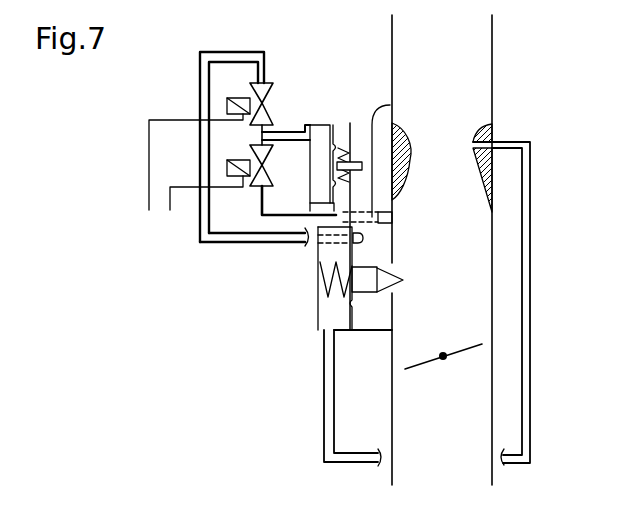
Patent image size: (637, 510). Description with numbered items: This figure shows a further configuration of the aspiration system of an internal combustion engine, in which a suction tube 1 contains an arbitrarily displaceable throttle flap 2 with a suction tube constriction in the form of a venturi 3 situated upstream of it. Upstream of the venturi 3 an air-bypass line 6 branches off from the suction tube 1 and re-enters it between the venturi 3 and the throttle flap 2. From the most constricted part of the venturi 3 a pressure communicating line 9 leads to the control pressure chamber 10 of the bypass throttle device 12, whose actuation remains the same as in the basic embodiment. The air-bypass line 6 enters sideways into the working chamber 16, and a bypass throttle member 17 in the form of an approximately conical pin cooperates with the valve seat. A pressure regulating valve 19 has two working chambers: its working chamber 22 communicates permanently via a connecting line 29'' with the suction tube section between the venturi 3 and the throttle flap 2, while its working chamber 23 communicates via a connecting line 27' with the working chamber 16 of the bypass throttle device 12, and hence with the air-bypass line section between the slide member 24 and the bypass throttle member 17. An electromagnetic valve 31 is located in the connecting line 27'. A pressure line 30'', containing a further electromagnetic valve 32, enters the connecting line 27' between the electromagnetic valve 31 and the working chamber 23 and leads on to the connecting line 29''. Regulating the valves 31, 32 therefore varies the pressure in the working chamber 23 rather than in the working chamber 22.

The suction tube 1 is at (492, 68).
The throttle flap 2 is at (465, 356).
The venturi 3 is at (490, 132).
The air-bypass line 6 is at (384, 98).
The pressure communicating line 9 is at (352, 463).
The control pressure chamber 10 is at (330, 308).
The bypass throttle device 12 is at (320, 276).
The working chamber 16 is at (370, 254).
The bypass throttle member 17 is at (390, 283).
The pressure regulating valve 19 is at (323, 125).
The working chamber 22 is at (350, 123).
The working chamber 23 is at (322, 160).
The slide member 24 is at (350, 158).
The connecting line 27' is at (255, 167).
The connecting line 29'' is at (393, 218).
The pressure line 30'' is at (299, 234).
The electromagnetic valve 31 is at (265, 95).
The electromagnetic valve 32 is at (260, 180).